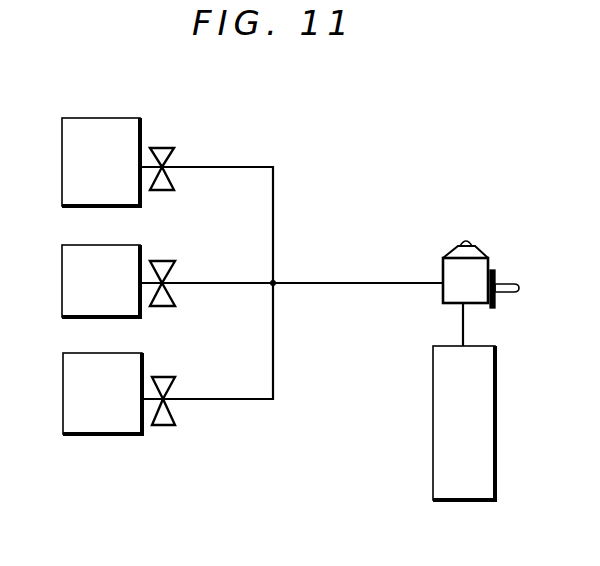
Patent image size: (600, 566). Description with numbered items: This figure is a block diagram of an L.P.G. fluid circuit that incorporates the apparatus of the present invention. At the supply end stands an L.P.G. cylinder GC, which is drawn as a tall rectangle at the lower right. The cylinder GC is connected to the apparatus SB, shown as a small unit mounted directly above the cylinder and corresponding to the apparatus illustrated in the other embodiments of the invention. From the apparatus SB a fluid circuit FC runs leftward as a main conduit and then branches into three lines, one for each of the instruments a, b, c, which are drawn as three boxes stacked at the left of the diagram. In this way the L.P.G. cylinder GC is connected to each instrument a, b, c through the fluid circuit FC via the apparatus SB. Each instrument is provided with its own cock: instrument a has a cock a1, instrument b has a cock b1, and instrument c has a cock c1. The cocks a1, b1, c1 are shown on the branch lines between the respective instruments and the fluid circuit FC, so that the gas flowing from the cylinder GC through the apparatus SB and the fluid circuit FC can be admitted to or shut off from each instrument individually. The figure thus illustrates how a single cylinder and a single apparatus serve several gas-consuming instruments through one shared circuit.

The instrument a is at (72, 183).
The instrument b is at (72, 287).
The instrument c is at (78, 393).
The cock a1 is at (163, 192).
The cock b1 is at (165, 308).
The cock c1 is at (165, 427).
The fluid circuit FC is at (355, 281).
The apparatus SB is at (478, 272).
The L.P.G. cylinder GC is at (484, 414).